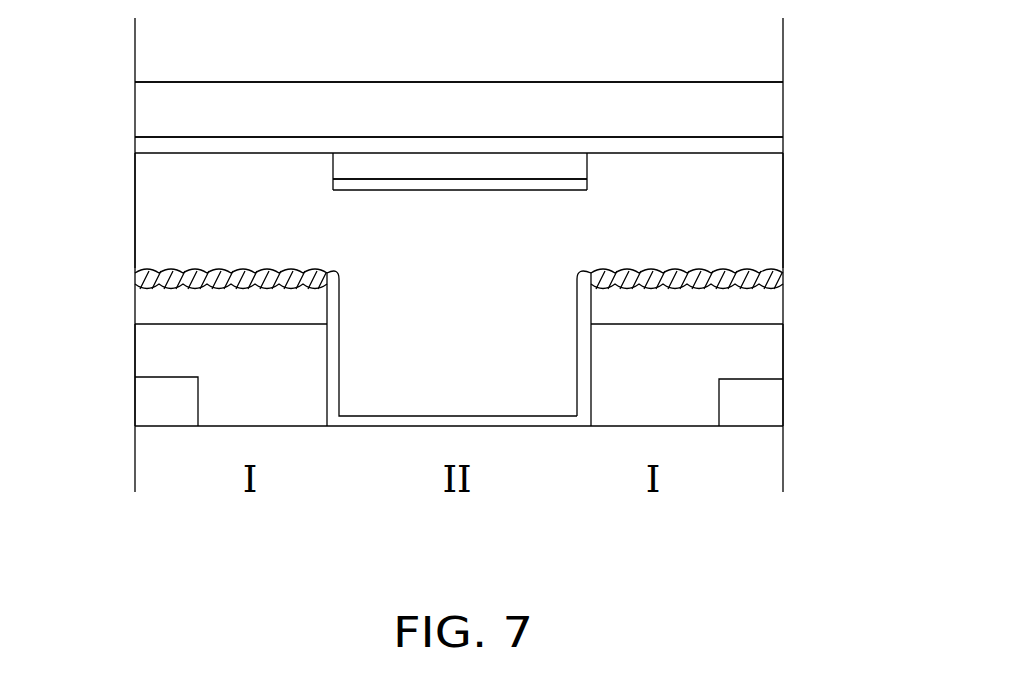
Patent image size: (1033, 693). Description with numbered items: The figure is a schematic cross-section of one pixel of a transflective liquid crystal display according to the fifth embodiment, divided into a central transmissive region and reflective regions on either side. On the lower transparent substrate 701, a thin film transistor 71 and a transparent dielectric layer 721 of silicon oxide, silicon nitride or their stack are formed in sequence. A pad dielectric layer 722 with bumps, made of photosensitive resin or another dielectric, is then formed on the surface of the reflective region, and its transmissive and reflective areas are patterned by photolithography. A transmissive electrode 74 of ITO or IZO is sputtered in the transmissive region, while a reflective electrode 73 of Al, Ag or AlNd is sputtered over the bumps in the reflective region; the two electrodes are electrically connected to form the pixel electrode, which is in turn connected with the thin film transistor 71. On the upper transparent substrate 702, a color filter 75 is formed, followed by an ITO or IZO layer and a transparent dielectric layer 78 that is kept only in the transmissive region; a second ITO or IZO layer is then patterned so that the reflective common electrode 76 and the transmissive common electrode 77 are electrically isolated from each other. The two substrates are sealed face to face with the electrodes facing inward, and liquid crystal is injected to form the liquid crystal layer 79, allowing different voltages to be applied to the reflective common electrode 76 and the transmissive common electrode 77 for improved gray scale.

The transparent substrate 701 is at (459, 452).
The transparent substrate 702 is at (459, 59).
The thin film transistor 71 is at (158, 403).
The transparent dielectric layer 721 is at (758, 353).
The pad dielectric layer 722 is at (762, 308).
The reflective electrode 73 is at (783, 277).
The transmissive electrode 74 is at (585, 323).
The color filter 75 is at (760, 110).
The reflective common electrode 76 is at (753, 148).
The transmissive common electrode 77 is at (450, 185).
The transparent dielectric layer 78 is at (563, 170).
The liquid crystal layer 79 is at (760, 217).